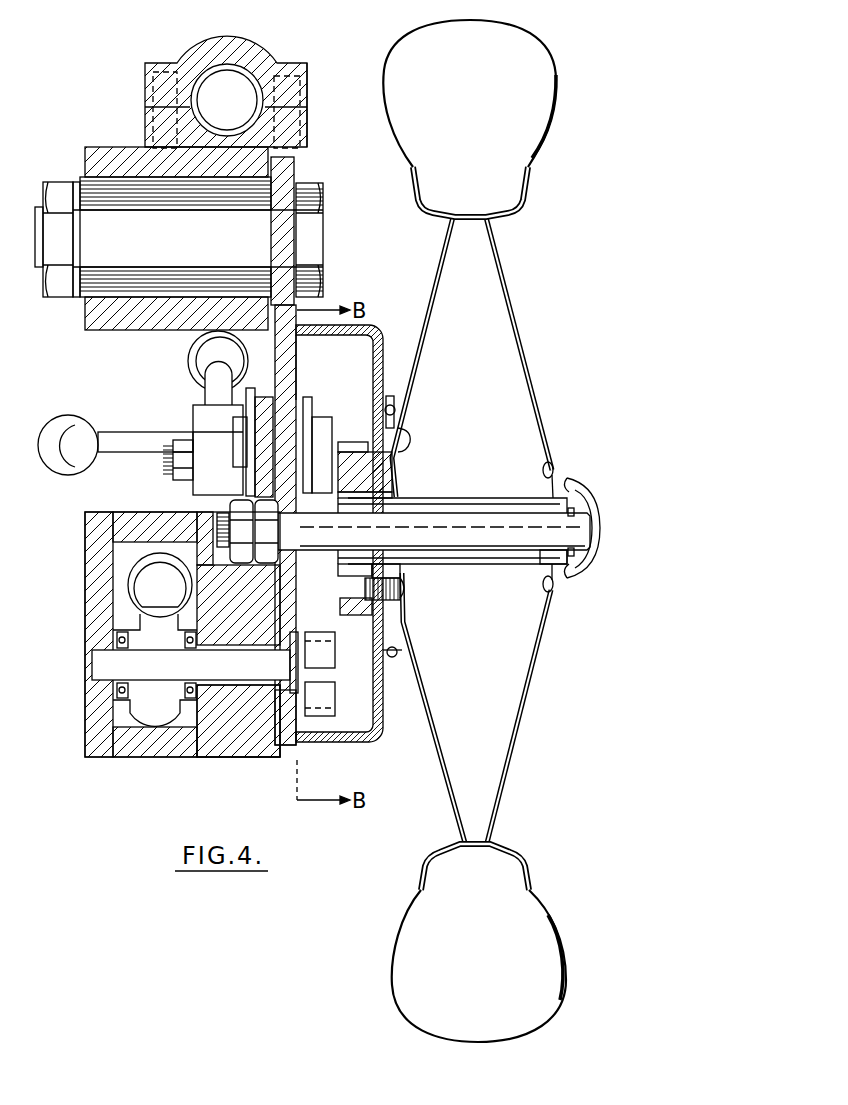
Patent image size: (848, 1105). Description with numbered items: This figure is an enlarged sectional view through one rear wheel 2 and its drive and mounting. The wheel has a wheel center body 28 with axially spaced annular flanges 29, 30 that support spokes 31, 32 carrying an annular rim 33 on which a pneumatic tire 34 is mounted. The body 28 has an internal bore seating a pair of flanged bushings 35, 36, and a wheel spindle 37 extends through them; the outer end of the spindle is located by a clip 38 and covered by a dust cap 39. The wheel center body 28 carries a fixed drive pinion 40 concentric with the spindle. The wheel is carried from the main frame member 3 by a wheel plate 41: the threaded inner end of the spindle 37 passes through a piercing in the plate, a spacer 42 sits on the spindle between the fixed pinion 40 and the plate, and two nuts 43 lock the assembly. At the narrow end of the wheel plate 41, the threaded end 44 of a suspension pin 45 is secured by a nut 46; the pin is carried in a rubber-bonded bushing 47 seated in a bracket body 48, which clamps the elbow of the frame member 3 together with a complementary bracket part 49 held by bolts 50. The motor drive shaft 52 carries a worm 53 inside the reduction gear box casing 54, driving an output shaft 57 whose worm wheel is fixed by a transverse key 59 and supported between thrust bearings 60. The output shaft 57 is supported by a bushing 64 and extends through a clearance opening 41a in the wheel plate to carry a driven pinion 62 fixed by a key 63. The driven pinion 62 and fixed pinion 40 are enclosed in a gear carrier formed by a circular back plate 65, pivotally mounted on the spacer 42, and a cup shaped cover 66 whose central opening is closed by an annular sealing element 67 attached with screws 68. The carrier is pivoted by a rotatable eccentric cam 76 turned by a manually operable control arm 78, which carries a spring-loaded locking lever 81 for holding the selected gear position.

The rear wheel 2 is at (492, 530).
The main frame member 3 is at (234, 84).
The wheel center body 28 is at (455, 500).
The annular flange 29 is at (556, 476).
The annular flange 30 is at (406, 448).
The spoke 31 is at (535, 383).
The spoke 32 is at (410, 368).
The annular rim 33 is at (525, 200).
The pneumatic tire 34 is at (548, 133).
The flanged bushing 35 is at (390, 572).
The flanged bushing 36 is at (530, 556).
The wheel spindle 37 is at (455, 532).
The clip 38 is at (560, 590).
The dust cap 39 is at (590, 568).
The fixed drive pinion 40 is at (350, 458).
The wheel plate 41 is at (292, 290).
The clearance opening 41a is at (300, 727).
The spacer 42 is at (322, 562).
The nuts 43 is at (236, 500).
The threaded end 44 is at (282, 225).
The suspension pin 45 is at (95, 222).
The nut 46 is at (316, 198).
The rubber-bonded bushing 47 is at (92, 284).
The bracket body 48 is at (121, 155).
The complementary bracket part 49 is at (195, 58).
The bolts 50 is at (302, 70).
The drive shaft 52 is at (144, 588).
The worm 53 is at (134, 575).
The reduction gear box casing 54 is at (100, 526).
The output shaft 57 is at (115, 668).
The transverse key 59 is at (186, 665).
The thrust bearings 60 is at (122, 692).
The driven pinion 62 is at (325, 700).
The key 63 is at (322, 660).
The bushing 64 is at (256, 700).
The circular back plate 65 is at (300, 352).
The cup shaped cover 66 is at (372, 327).
The annular sealing element 67 is at (387, 396).
The screws 68 is at (400, 653).
The rotatable eccentric cam 76 is at (304, 412).
The manually operable control arm 78 is at (82, 438).
The spring-loaded locking lever 81 is at (195, 340).